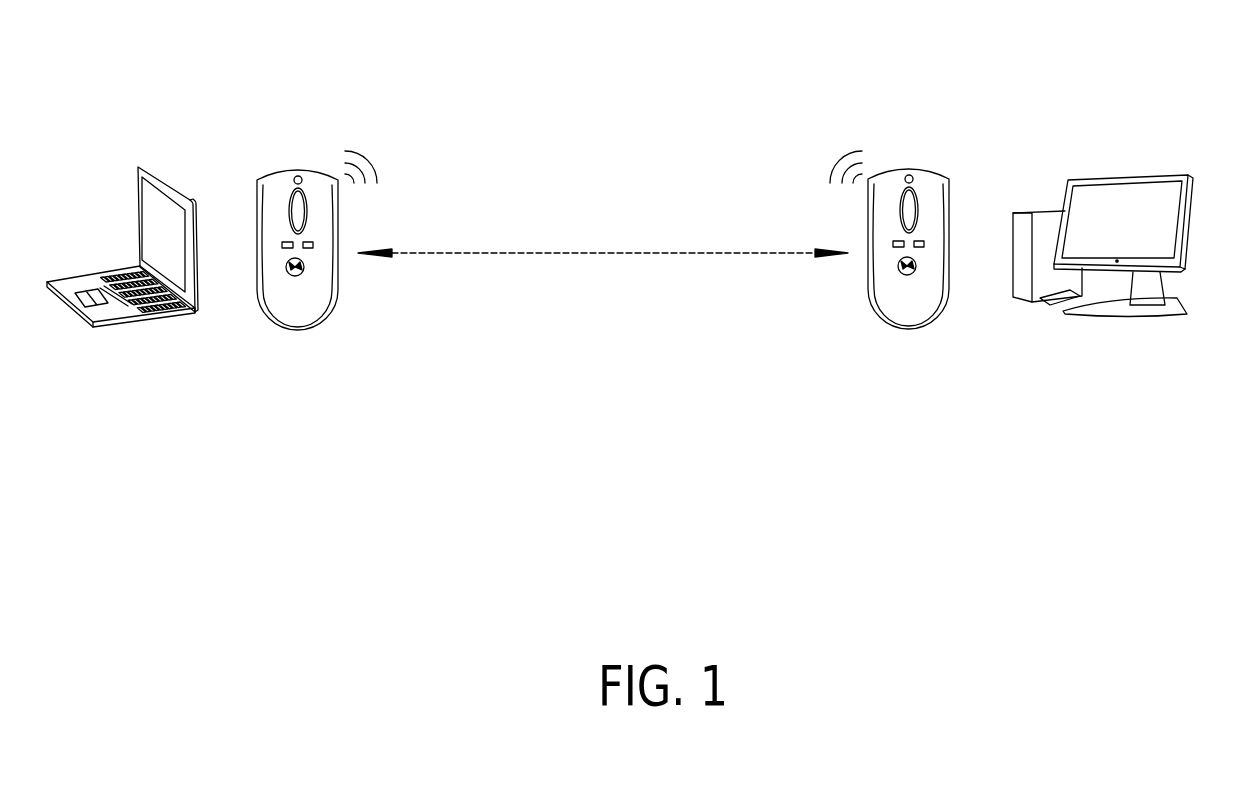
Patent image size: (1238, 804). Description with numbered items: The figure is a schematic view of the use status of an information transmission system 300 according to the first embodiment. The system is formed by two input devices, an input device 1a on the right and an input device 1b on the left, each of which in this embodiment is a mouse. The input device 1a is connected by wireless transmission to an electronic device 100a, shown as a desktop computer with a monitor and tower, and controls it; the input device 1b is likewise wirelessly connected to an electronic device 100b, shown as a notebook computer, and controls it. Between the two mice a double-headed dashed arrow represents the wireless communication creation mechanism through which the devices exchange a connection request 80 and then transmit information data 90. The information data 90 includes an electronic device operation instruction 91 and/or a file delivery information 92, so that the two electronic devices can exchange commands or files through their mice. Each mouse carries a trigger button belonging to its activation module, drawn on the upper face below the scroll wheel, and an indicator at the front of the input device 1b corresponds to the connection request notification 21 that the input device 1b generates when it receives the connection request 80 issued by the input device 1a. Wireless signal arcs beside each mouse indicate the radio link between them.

The information transmission system 300 is at (315, 98).
The connection request notification 21 is at (297, 176).
The input device 1b is at (294, 226).
The input device 1a is at (900, 235).
The electronic device 100b is at (140, 168).
The electronic device 100a is at (1088, 193).
The connection request 80 is at (603, 312).
The information data 90 is at (603, 312).
The electronic device operation instruction 91 is at (603, 312).
The file delivery information 92 is at (600, 254).